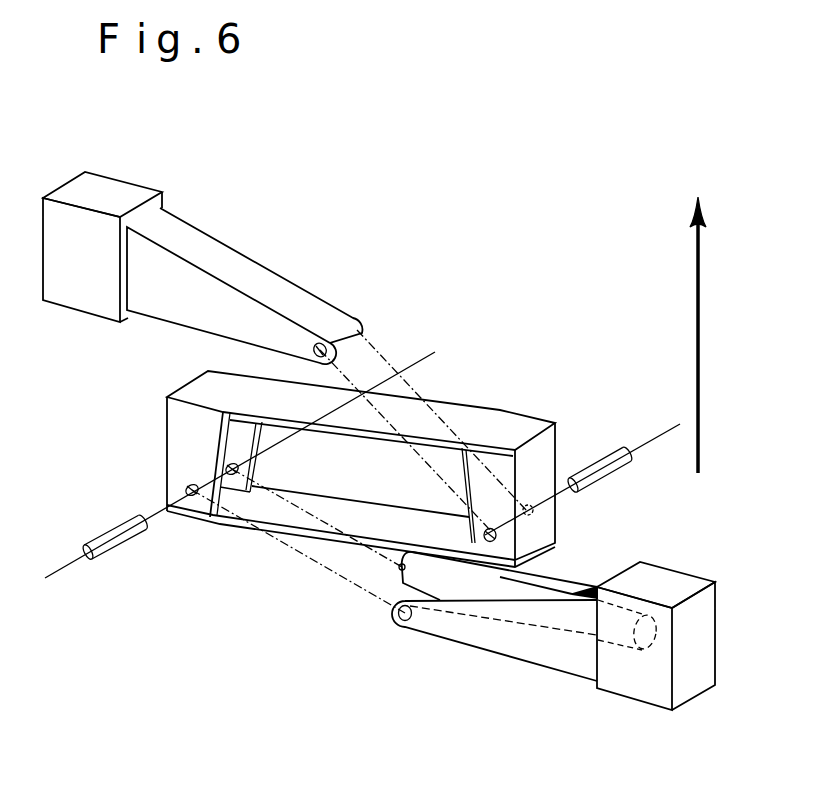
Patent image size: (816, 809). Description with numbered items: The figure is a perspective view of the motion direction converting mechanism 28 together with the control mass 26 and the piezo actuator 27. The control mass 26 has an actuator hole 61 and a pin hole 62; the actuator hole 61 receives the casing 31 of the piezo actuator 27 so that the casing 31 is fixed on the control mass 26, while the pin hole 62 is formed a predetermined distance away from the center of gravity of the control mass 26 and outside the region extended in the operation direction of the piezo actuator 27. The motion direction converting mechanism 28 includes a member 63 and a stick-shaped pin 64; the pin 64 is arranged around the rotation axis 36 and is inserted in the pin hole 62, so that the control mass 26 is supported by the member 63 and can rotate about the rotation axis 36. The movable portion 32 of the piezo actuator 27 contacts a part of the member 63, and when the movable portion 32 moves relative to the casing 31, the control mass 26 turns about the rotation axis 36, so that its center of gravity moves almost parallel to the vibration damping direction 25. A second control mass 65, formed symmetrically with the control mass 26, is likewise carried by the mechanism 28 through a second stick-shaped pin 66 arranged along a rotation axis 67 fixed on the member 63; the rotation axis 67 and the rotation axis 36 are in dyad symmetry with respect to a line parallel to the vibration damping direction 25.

The vibration damping direction 25 is at (695, 243).
The control mass 26 is at (675, 577).
The piezo actuator 27 is at (553, 577).
The motion direction converting mechanism 28 is at (299, 469).
The casing 31 is at (473, 590).
The movable portion 32 is at (398, 566).
The rotation axis 36 is at (68, 558).
The actuator hole 61 is at (567, 627).
The pin hole 62 is at (398, 622).
The member 63 is at (167, 448).
The pin 64 is at (115, 513).
The control mass 65 is at (108, 182).
The pin 66 is at (611, 457).
The rotation axis 67 is at (656, 437).